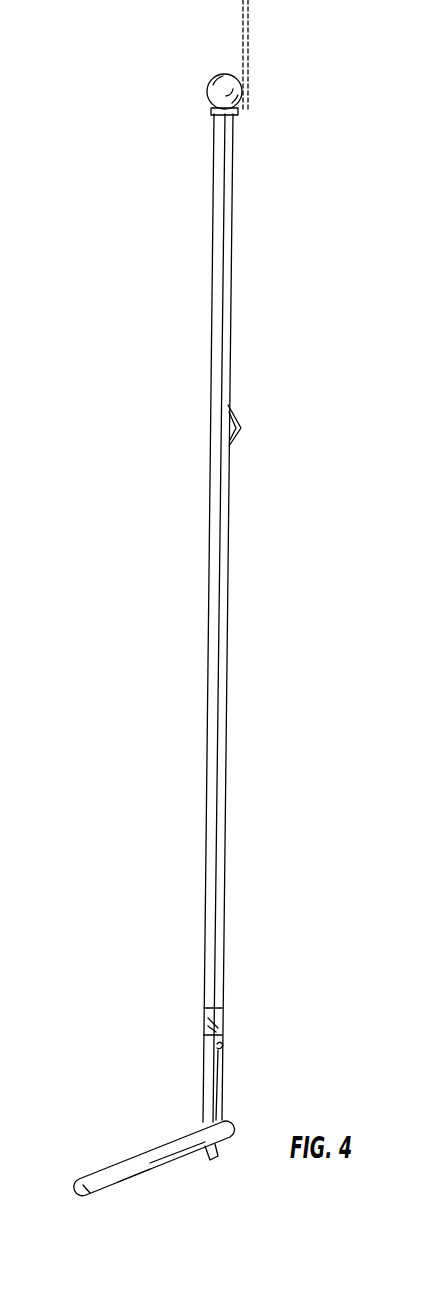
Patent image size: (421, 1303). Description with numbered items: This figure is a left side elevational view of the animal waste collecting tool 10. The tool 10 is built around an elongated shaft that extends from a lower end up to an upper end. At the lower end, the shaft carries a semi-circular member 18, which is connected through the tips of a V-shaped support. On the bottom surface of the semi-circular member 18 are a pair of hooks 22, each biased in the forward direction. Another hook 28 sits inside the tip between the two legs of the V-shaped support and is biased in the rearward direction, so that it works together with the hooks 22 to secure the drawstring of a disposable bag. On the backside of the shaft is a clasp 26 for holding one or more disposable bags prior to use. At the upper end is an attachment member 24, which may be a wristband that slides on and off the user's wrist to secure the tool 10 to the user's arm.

The animal waste collecting tool 10 is at (90, 314).
The semi-circular member 18 is at (125, 1155).
The hooks 22 is at (212, 1160).
The attachment member 24 is at (249, 38).
The clasp 26 is at (243, 432).
The hook 28 is at (228, 1050).